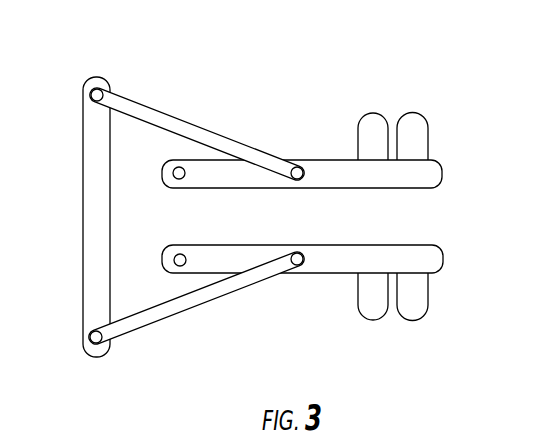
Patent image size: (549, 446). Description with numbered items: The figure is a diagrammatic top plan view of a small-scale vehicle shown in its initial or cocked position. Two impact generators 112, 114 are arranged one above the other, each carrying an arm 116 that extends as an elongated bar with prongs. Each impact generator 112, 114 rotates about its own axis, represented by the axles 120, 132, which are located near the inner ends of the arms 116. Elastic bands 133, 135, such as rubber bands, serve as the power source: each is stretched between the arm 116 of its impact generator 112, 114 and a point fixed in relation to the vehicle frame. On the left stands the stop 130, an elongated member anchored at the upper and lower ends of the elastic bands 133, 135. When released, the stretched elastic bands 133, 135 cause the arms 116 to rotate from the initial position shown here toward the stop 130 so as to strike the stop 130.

The impact generator 112 is at (289, 70).
The impact generator 114 is at (313, 322).
The arm 116 is at (428, 173).
The axle 120 is at (178, 167).
The stop 130 is at (98, 153).
The axle 132 is at (178, 267).
The elastic band 133 is at (190, 123).
The elastic band 135 is at (185, 313).